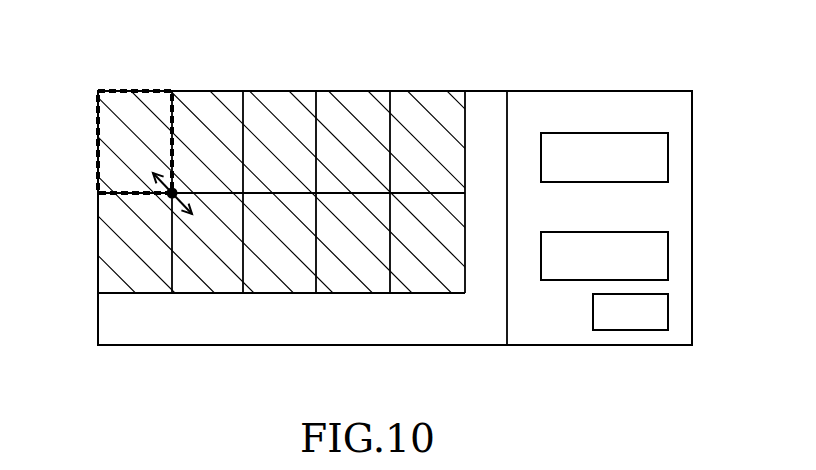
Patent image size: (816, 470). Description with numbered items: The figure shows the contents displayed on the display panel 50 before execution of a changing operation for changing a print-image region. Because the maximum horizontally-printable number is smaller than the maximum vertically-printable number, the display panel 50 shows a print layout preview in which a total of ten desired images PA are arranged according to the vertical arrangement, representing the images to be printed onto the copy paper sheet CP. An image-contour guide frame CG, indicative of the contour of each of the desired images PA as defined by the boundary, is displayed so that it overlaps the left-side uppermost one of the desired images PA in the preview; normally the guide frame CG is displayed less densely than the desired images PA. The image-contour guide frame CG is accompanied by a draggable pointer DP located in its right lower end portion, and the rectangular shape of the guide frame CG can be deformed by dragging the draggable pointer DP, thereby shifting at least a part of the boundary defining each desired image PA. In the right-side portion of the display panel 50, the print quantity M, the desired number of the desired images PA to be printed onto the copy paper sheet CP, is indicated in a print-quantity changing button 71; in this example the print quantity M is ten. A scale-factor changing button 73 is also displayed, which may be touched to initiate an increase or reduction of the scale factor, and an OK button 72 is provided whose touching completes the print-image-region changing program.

The display panel 50 is at (479, 68).
The desired images PA is at (420, 100).
The copy paper sheet CP is at (489, 326).
The image-contour guide frame CG is at (135, 90).
The draggable pointer DP is at (168, 195).
The scale-factor changing button 73 is at (669, 152).
The print-quantity changing button 71 is at (669, 268).
The print quantity M is at (655, 246).
The OK button 72 is at (669, 320).